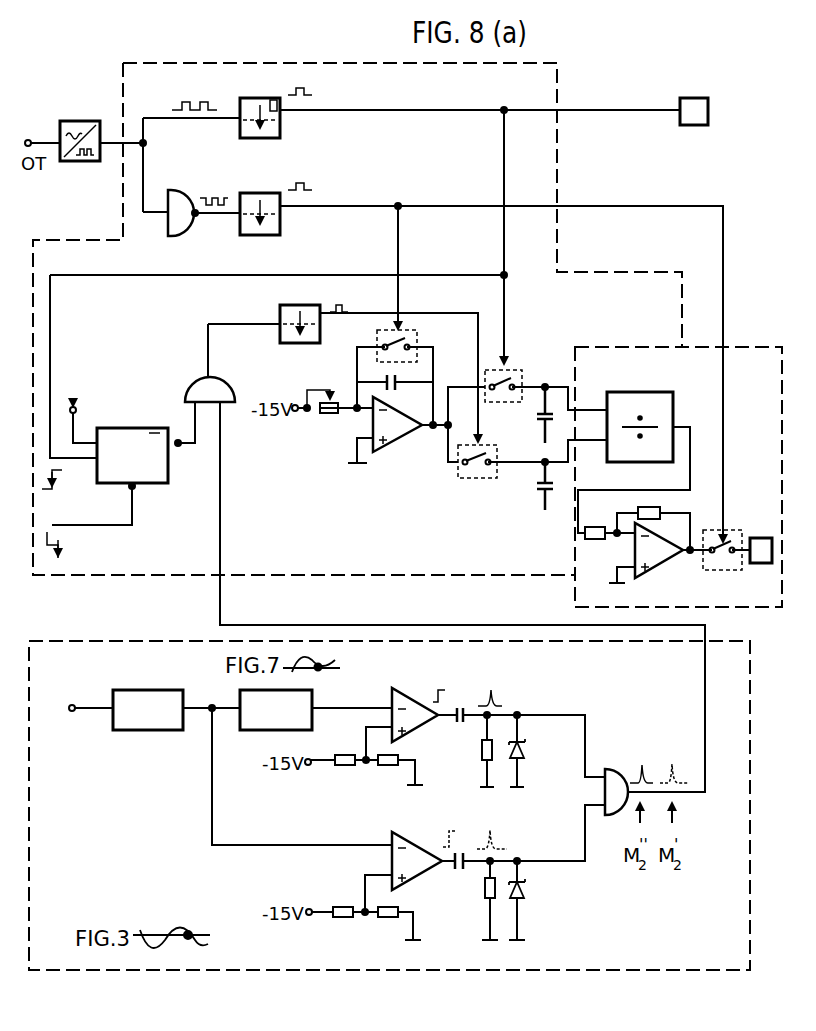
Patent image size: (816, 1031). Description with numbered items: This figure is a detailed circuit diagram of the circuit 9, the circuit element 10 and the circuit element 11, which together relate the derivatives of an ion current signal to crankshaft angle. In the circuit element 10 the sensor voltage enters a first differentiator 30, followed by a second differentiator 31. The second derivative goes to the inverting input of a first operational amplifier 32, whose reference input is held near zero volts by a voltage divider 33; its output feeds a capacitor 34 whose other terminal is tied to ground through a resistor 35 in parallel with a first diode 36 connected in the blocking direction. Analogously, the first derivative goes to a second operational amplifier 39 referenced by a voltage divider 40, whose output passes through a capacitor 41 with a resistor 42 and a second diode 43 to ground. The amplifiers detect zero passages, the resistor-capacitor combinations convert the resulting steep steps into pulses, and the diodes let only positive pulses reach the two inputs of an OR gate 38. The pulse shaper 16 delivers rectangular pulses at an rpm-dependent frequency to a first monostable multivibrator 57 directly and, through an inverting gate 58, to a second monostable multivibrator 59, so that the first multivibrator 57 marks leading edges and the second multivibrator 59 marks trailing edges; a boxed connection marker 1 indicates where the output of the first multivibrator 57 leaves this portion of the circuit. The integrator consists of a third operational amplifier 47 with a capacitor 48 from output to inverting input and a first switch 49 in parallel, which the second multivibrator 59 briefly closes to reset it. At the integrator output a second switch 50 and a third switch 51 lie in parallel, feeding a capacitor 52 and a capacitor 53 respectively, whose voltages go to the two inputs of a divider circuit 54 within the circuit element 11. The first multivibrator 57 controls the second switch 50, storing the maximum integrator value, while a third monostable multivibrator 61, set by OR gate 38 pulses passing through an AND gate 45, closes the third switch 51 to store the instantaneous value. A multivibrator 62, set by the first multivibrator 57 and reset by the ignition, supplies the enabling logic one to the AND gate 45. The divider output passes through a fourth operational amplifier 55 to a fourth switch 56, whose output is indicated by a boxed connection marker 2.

The output terminal 1 is at (694, 111).
The output terminal 2 is at (761, 551).
The circuit 9 is at (637, 271).
The circuit element 10 is at (79, 972).
The circuit element 11 is at (782, 477).
The pulse shaper 16 is at (80, 120).
The first differentiator 30 is at (140, 731).
The second differentiator 31 is at (253, 732).
The first operational amplifier 32 is at (399, 700).
The voltage divider 33 is at (366, 767).
The capacitor 34 is at (459, 731).
The resistor 35 is at (481, 752).
The first diode 36 is at (524, 752).
The OR gate 38 is at (607, 771).
The second operational amplifier 39 is at (400, 842).
The voltage divider 40 is at (365, 929).
The capacitor 41 is at (475, 865).
The resistor 42 is at (486, 896).
The second diode 43 is at (523, 896).
The AND gate 45 is at (226, 395).
The third operational amplifier 47 is at (398, 439).
The capacitor 48 is at (398, 382).
The first switch 49 is at (412, 337).
The second switch 50 is at (514, 372).
The third switch 51 is at (479, 480).
The capacitor 52 is at (540, 422).
The capacitor 53 is at (538, 489).
The divider circuit 54 is at (628, 397).
The fourth operational amplifier 55 is at (660, 562).
The fourth switch 56 is at (726, 568).
The first monostable multivibrator 57 is at (282, 128).
The inverting gate 58 is at (182, 198).
The second monostable multivibrator 59 is at (282, 224).
The third monostable multivibrator 61 is at (290, 306).
The multivibrator 62 is at (150, 482).